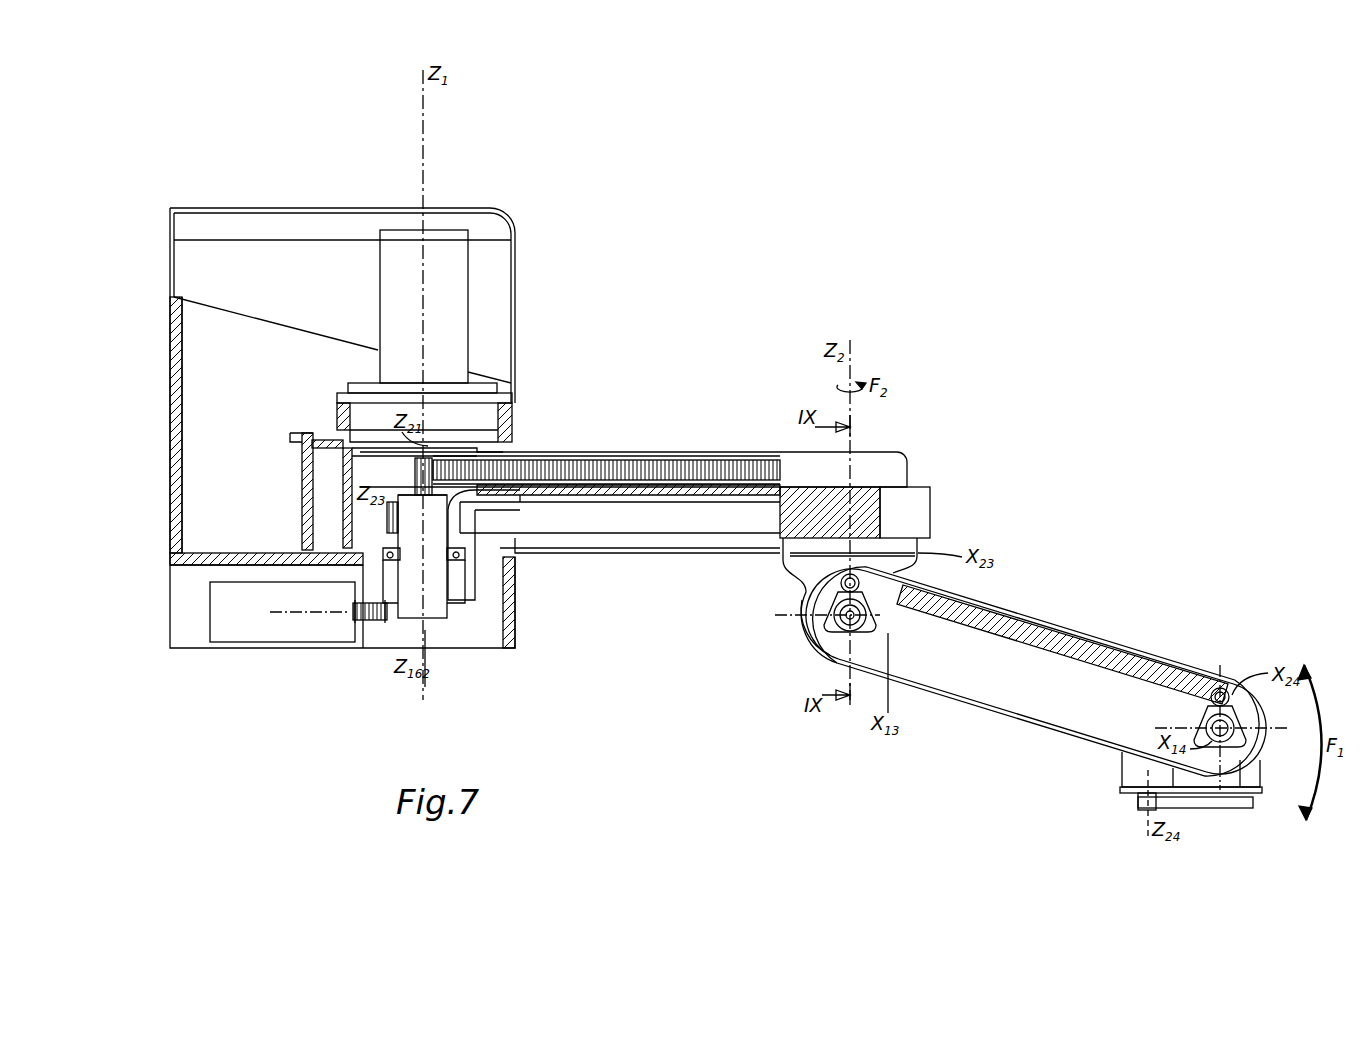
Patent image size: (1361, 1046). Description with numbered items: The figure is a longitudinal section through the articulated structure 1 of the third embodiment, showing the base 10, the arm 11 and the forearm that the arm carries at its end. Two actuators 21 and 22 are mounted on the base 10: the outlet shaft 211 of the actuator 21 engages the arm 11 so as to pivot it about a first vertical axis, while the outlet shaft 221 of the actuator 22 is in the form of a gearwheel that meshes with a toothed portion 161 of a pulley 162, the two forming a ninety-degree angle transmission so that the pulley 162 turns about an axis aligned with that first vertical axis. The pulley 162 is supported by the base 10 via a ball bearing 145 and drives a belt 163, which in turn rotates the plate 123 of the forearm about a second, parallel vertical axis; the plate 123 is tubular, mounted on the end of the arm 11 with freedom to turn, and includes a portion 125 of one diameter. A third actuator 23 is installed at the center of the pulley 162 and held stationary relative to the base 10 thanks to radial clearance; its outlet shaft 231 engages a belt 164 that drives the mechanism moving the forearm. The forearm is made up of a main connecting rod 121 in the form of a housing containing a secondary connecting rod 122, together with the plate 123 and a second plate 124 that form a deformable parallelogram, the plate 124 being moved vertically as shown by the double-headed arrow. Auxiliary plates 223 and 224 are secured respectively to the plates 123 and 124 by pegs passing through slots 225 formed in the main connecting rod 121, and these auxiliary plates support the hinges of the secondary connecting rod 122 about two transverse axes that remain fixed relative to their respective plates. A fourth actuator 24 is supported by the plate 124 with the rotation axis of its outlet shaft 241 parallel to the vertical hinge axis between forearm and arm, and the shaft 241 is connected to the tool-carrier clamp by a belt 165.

The structure 1 is at (760, 258).
The base 10 is at (172, 468).
The arm 11 is at (590, 542).
The actuator 21 is at (457, 288).
The actuator 22 is at (247, 627).
The third actuator 23 is at (395, 535).
The fourth actuator 24 is at (1125, 769).
The main first connecting rod 121 is at (1010, 600).
The secondary second connecting rod 122 is at (1088, 637).
The plate 123 is at (795, 550).
The plate 124 is at (1248, 781).
The portion 125 is at (792, 617).
The ball bearing 145 is at (390, 517).
The toothed portion 161 is at (470, 604).
The pulley 162 is at (460, 603).
The belt 163 is at (670, 522).
The belt 164 is at (638, 460).
The belt 165 is at (1200, 803).
The outlet shaft 211 is at (515, 423).
The outlet shaft 221 is at (385, 623).
The auxiliary plate 223 is at (828, 653).
The auxiliary plate 224 is at (1244, 722).
The slot 225 is at (1200, 722).
The outlet shaft 231 is at (345, 443).
The outlet shaft 241 is at (1136, 794).